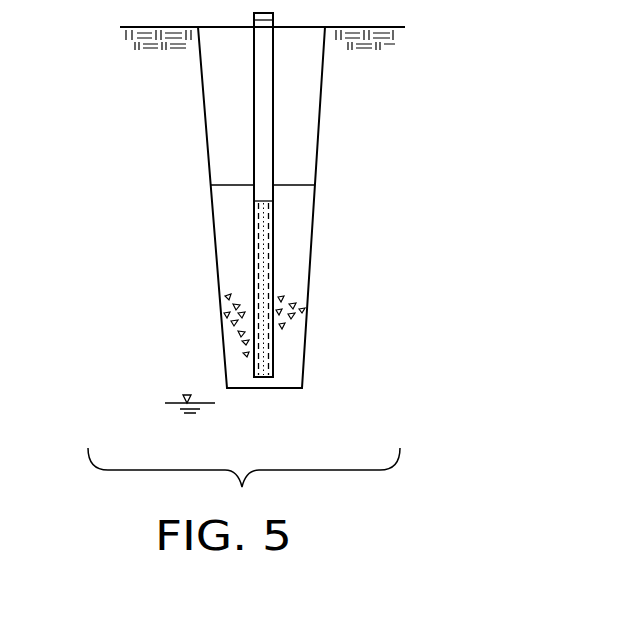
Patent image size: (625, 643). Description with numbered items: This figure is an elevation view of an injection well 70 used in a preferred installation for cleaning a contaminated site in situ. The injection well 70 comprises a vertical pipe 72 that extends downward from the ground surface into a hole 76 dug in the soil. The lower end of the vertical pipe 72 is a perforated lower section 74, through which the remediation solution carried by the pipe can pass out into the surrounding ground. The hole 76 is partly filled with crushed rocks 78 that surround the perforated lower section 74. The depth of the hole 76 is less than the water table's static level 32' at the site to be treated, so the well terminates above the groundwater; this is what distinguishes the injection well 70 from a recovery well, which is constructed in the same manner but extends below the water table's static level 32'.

The injection well 70 is at (413, 119).
The vertical pipe 72 is at (254, 127).
The perforated lower section 74 is at (254, 253).
The hole 76 is at (318, 173).
The crushed rocks 78 is at (290, 253).
The water table's static level 32' is at (161, 385).